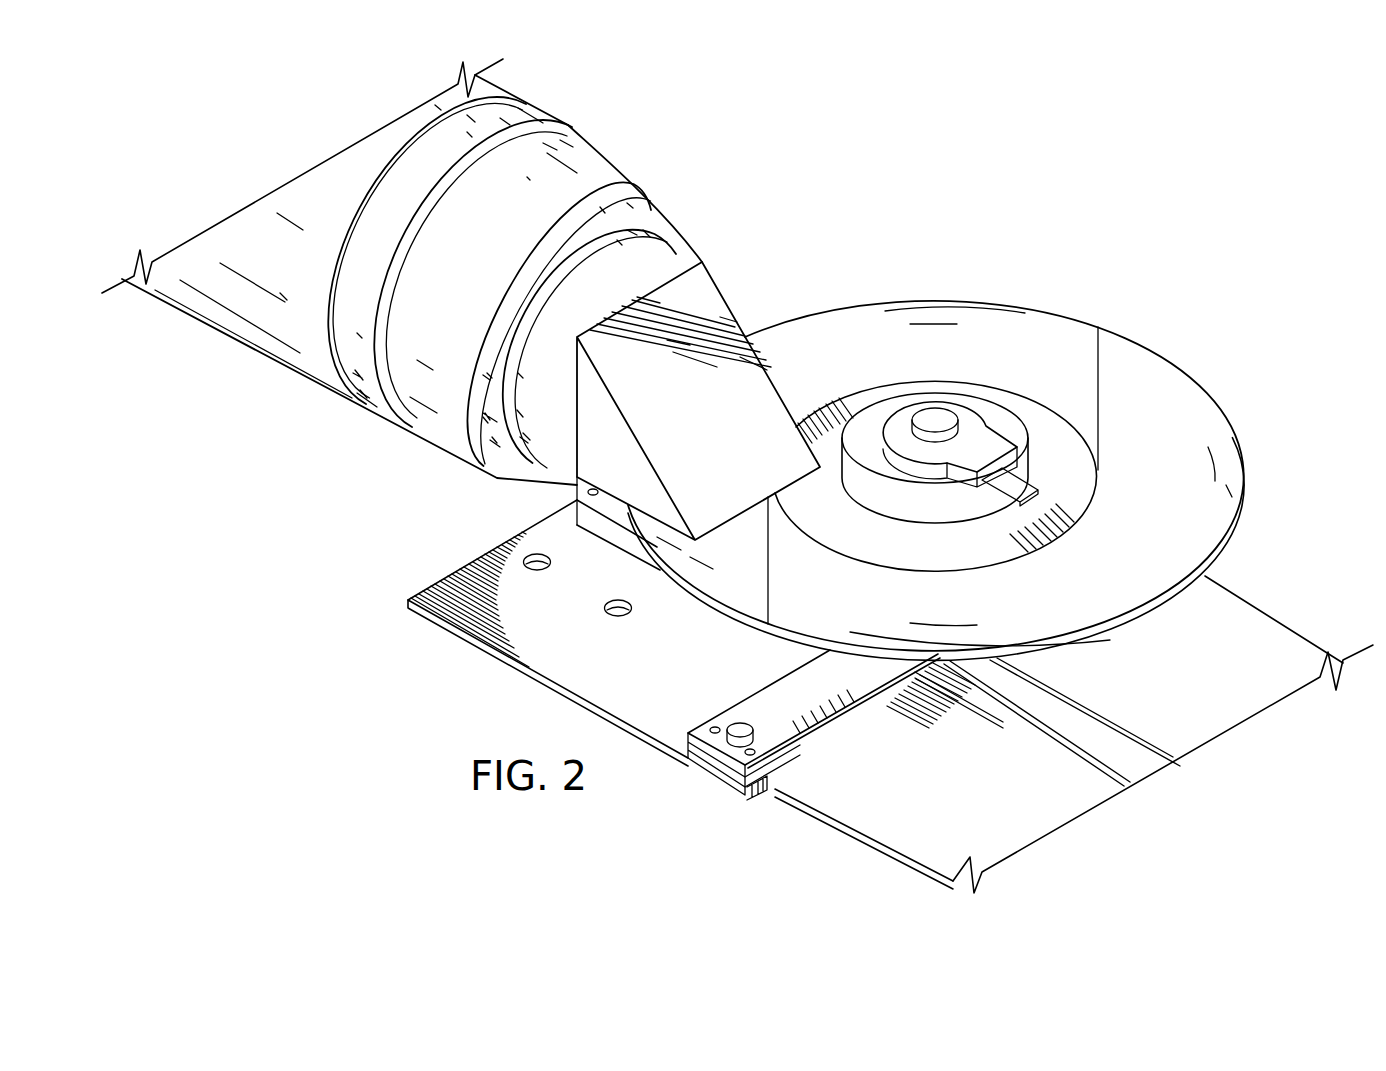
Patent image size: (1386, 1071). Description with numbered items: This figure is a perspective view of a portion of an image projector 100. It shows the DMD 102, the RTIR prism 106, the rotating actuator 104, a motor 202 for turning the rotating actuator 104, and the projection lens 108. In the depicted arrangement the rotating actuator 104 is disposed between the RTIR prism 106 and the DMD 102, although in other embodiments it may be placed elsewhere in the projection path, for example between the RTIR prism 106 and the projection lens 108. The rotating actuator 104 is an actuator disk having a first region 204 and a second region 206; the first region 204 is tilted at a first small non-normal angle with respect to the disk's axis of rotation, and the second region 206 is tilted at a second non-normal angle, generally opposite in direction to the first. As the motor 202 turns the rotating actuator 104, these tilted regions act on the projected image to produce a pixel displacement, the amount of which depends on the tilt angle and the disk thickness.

The image projector 100 is at (1009, 140).
The DMD 102 is at (577, 484).
The rotating actuator 104 is at (1065, 310).
The RTIR prism 106 is at (721, 283).
The projection lens 108 is at (632, 173).
The motor 202 is at (876, 393).
The first region 204 is at (1190, 383).
The second region 206 is at (853, 304).